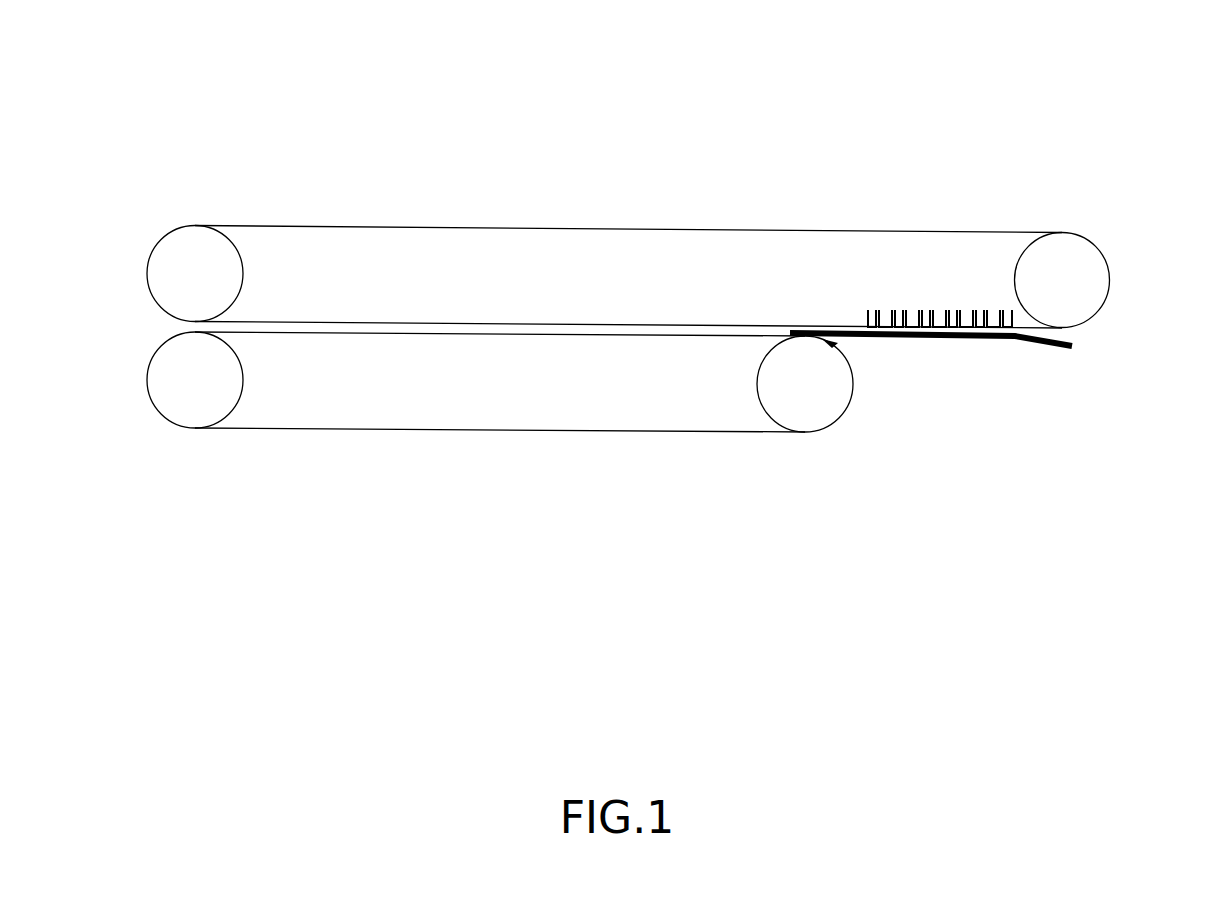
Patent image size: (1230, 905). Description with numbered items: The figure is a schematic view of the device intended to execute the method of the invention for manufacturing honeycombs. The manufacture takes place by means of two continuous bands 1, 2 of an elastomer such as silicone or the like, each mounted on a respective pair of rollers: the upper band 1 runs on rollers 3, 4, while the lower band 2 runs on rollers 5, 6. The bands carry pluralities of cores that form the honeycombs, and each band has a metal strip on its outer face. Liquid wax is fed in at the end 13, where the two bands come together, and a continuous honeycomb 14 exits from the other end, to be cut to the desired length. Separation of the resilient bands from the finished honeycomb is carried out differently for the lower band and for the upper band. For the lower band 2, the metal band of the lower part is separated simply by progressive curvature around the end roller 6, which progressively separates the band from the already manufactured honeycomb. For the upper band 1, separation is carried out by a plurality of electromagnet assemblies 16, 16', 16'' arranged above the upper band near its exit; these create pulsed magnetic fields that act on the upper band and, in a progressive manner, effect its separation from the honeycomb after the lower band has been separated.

The continuous band 1 is at (362, 140).
The continuous band 2 is at (357, 508).
The roller 3 is at (194, 238).
The roller 4 is at (1063, 247).
The roller 5 is at (192, 413).
The end roller 6 is at (805, 420).
The end 13 is at (124, 313).
The continuous honeycomb 14 is at (1058, 350).
The electromagnet assembly 16 is at (893, 183).
The electromagnet assembly 16' is at (933, 201).
The electromagnet assembly 16'' is at (978, 219).